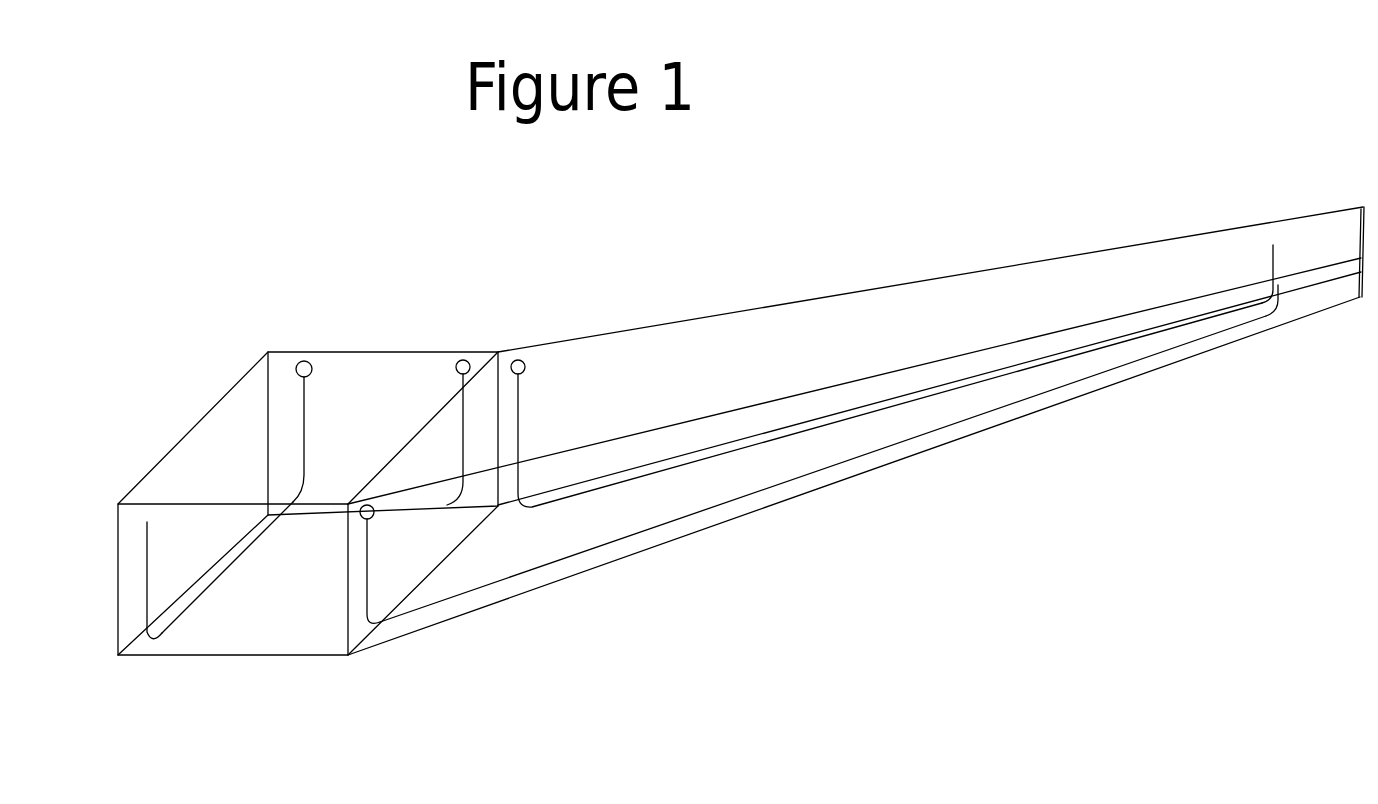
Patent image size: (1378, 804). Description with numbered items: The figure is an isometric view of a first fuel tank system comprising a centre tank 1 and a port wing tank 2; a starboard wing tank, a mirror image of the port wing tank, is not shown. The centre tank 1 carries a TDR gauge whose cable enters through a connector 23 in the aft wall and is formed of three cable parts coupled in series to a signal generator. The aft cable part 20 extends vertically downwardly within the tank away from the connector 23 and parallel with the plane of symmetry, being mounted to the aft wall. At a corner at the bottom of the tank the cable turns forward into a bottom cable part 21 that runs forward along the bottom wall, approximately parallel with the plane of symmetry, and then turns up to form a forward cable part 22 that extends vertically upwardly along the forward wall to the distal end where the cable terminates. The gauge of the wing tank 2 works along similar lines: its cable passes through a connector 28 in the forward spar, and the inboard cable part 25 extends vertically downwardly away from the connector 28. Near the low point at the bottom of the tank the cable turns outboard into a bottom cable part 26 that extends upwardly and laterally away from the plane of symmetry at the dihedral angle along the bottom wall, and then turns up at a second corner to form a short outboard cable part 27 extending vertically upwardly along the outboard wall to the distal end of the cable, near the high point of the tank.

The centre tank 1 is at (262, 689).
The port wing tank 2 is at (626, 618).
The aft cable part 20 is at (305, 406).
The bottom cable part 21 is at (244, 548).
The forward cable part 22 is at (145, 560).
The connector 23 is at (307, 361).
The inboard cable part 25 is at (368, 555).
The bottom cable part 26 is at (705, 517).
The outboard cable part 27 is at (1277, 289).
The connector 28 is at (365, 505).